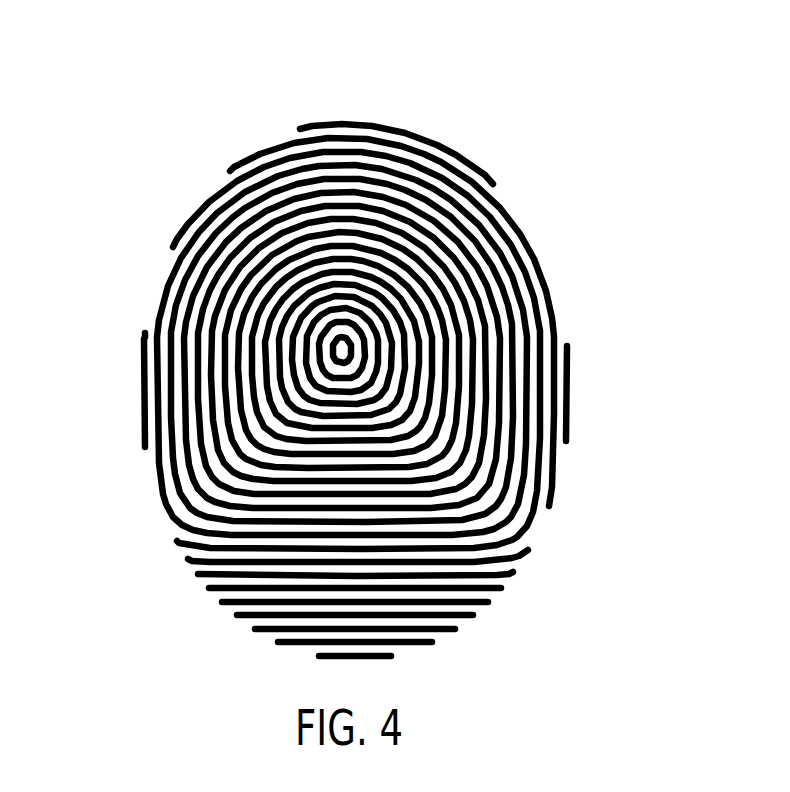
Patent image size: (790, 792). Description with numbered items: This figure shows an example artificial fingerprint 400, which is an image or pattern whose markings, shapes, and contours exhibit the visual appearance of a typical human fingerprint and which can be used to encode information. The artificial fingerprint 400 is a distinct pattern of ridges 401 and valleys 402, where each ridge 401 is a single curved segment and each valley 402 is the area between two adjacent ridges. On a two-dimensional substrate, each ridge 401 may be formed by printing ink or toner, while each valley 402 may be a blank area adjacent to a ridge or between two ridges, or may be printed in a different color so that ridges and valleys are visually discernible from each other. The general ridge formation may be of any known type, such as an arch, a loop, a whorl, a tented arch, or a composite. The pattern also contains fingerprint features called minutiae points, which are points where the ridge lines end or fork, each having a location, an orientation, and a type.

The artificial fingerprint 400 is at (148, 141).
The ridges 401 is at (507, 223).
The valleys 402 is at (512, 273).